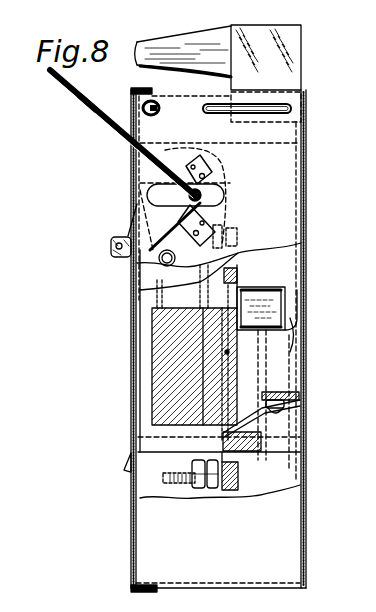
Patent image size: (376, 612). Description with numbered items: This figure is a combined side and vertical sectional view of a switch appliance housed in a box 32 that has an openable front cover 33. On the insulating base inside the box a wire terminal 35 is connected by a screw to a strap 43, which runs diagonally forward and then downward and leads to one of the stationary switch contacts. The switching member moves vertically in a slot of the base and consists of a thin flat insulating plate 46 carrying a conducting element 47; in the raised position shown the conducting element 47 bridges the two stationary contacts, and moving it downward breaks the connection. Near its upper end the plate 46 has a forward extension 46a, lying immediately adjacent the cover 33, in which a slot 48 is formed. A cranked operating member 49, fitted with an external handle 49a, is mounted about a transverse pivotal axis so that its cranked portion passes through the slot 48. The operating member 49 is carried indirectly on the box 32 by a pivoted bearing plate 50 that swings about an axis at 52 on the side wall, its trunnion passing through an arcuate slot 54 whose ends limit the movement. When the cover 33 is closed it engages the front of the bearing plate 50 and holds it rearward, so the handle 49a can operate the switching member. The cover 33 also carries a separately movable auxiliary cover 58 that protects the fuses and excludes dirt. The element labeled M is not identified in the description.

The board / material M is at (133, 68).
The box 32 is at (281, 586).
The openable front cover 33 is at (132, 528).
The wire terminal 35 is at (233, 482).
The strap 43 is at (285, 404).
The thin flat plate of insulating material 46 is at (256, 150).
The forward extension 46a is at (155, 152).
The conducting element 47 is at (267, 319).
The slot 48 is at (190, 151).
The cranked operating member 49 is at (150, 173).
The handle 49a is at (92, 119).
The pivoted bearing plate 50 is at (222, 183).
The pivotal axis 52 is at (136, 253).
The arcuate slot 54 is at (168, 206).
The auxiliary cover 58 is at (133, 414).